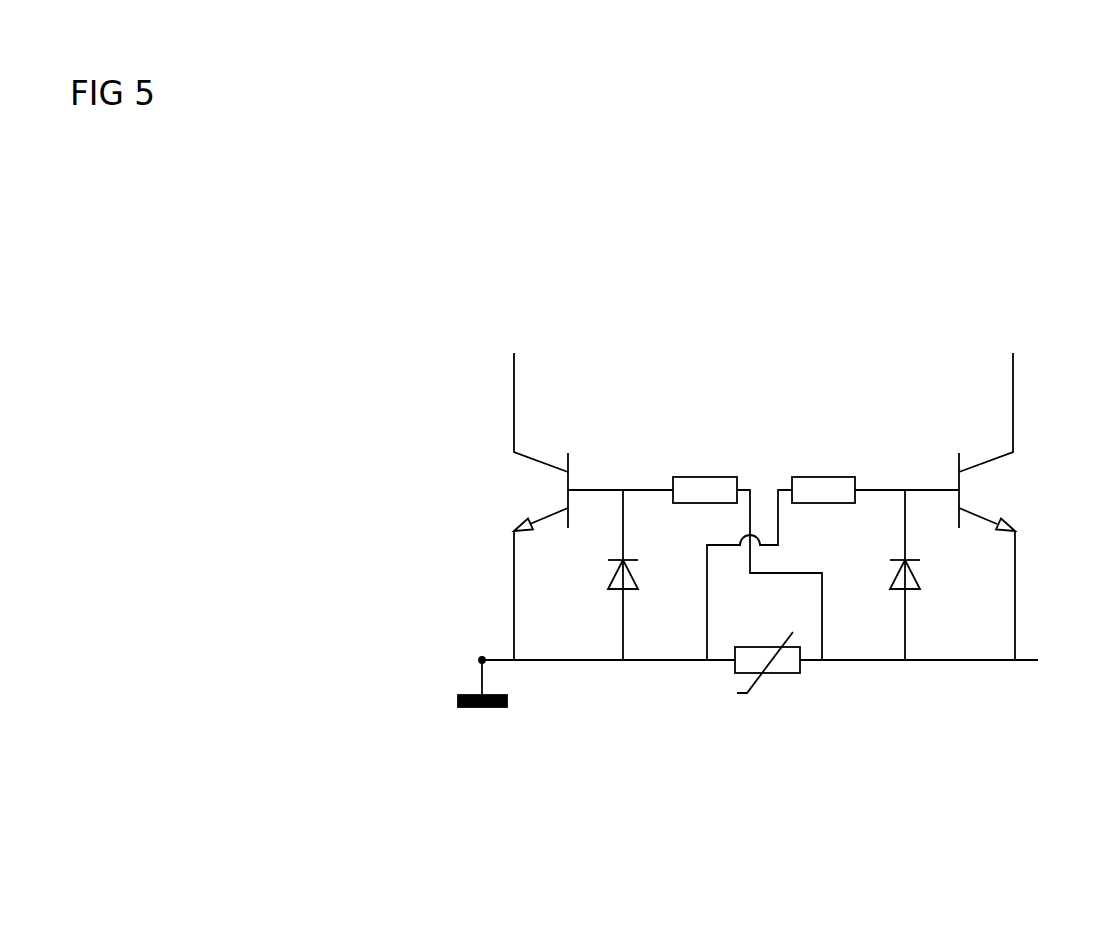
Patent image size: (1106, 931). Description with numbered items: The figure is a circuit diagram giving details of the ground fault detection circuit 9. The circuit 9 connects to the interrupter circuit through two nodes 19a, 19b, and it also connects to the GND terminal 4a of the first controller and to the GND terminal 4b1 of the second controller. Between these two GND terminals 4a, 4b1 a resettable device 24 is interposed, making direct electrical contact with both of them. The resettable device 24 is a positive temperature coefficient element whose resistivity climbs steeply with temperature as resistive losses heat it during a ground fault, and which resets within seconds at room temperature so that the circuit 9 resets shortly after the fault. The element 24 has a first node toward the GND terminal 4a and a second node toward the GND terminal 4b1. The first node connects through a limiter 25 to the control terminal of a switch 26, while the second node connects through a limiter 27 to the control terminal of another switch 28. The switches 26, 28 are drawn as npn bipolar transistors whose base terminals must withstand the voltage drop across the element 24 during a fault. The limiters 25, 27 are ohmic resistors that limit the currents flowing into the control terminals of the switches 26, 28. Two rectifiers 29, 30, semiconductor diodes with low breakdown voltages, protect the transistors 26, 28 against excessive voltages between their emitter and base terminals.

The ground fault detection circuit 9 is at (370, 463).
The node 19a is at (999, 391).
The node 19b is at (528, 391).
The resettable device 24 is at (767, 696).
The limiter 25 is at (747, 544).
The switch 26 is at (582, 556).
The limiter 27 is at (781, 544).
The switch 28 is at (951, 556).
The rectifier 29 is at (598, 575).
The rectifier 30 is at (925, 575).
The GND terminal of the first controller 4a is at (782, 659).
The GND terminal of the second controller 4b1 is at (479, 708).